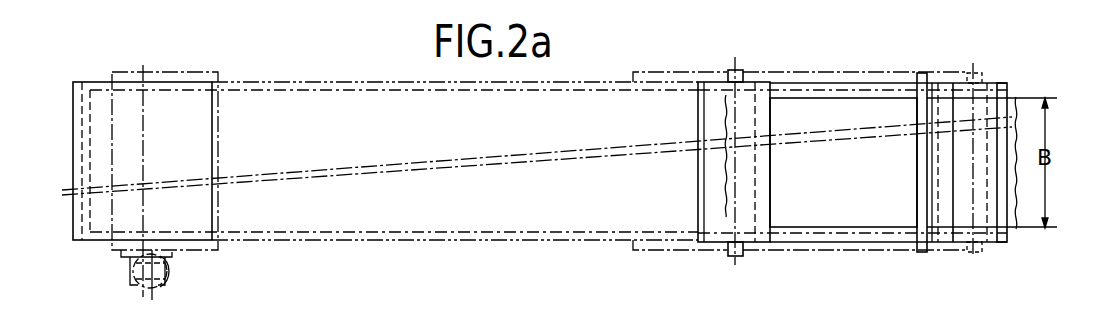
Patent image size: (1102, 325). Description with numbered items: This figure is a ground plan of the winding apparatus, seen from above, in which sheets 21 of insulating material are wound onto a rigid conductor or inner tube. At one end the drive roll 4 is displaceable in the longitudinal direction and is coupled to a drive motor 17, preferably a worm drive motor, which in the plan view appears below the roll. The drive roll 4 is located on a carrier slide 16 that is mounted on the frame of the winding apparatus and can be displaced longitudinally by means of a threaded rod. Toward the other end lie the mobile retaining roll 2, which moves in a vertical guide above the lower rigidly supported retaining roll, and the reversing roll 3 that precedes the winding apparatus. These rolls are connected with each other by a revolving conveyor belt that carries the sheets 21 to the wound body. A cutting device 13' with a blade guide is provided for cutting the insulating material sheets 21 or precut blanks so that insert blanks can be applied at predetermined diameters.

The mobile retaining roll 2 is at (715, 106).
The reversing roll 3 is at (983, 107).
The drive roll 4 is at (197, 107).
The cutting device 13' is at (941, 142).
The carrier slide 16 is at (161, 71).
The drive motor 17 is at (157, 267).
The sheets 21 is at (837, 116).